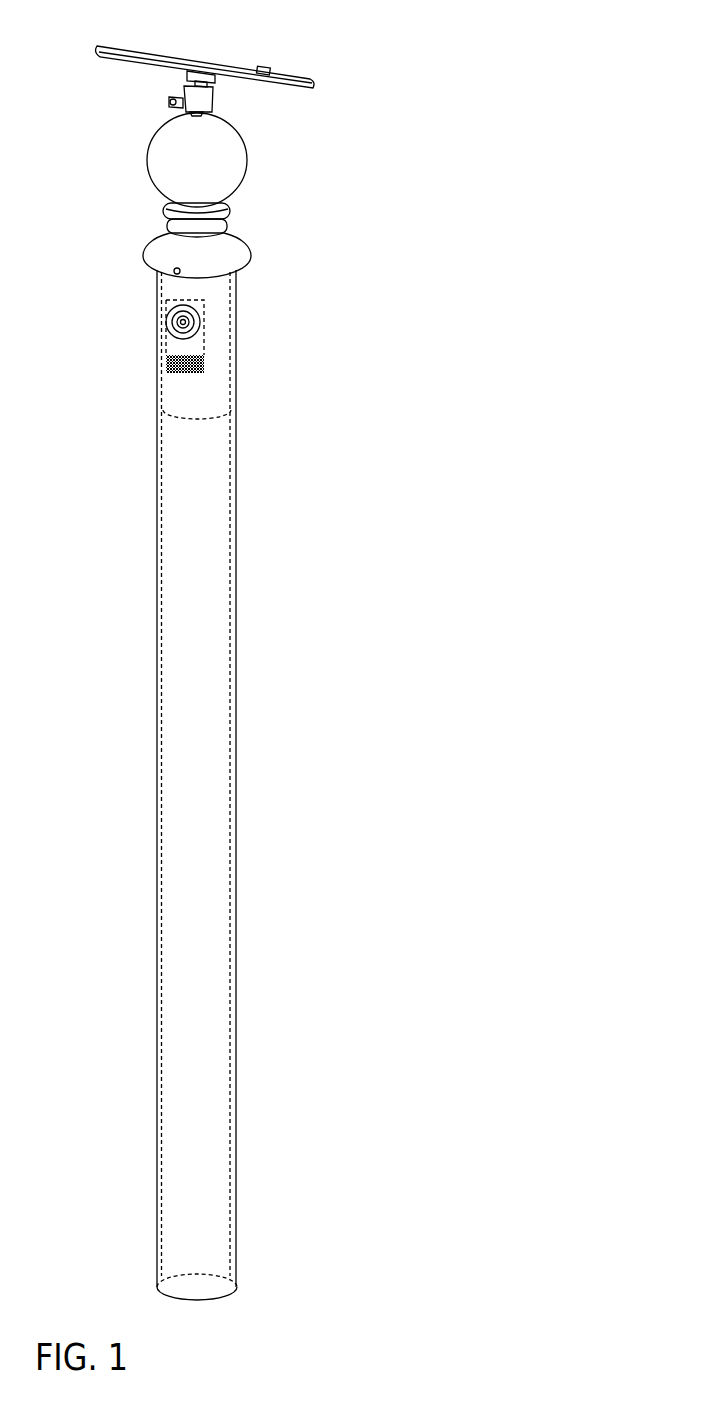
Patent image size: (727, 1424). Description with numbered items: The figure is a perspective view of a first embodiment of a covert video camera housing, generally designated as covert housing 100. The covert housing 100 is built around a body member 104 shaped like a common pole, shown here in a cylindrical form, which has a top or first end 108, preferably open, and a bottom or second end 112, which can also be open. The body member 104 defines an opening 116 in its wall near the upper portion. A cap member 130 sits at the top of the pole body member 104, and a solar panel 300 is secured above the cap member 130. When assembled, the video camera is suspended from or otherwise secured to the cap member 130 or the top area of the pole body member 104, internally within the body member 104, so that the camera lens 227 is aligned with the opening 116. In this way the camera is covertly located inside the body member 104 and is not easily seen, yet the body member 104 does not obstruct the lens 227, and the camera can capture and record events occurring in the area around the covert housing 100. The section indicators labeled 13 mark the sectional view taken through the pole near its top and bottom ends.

The solar panel 300 is at (297, 60).
The cap member 130 is at (223, 138).
The section line 13- 13 is at (196, 272).
The top or first end 108 is at (157, 301).
The camera lens 227 is at (198, 332).
The opening 116 is at (205, 365).
The covert housing 100 is at (262, 504).
The body member 104 is at (207, 792).
The bottom or second end 112 is at (228, 1297).